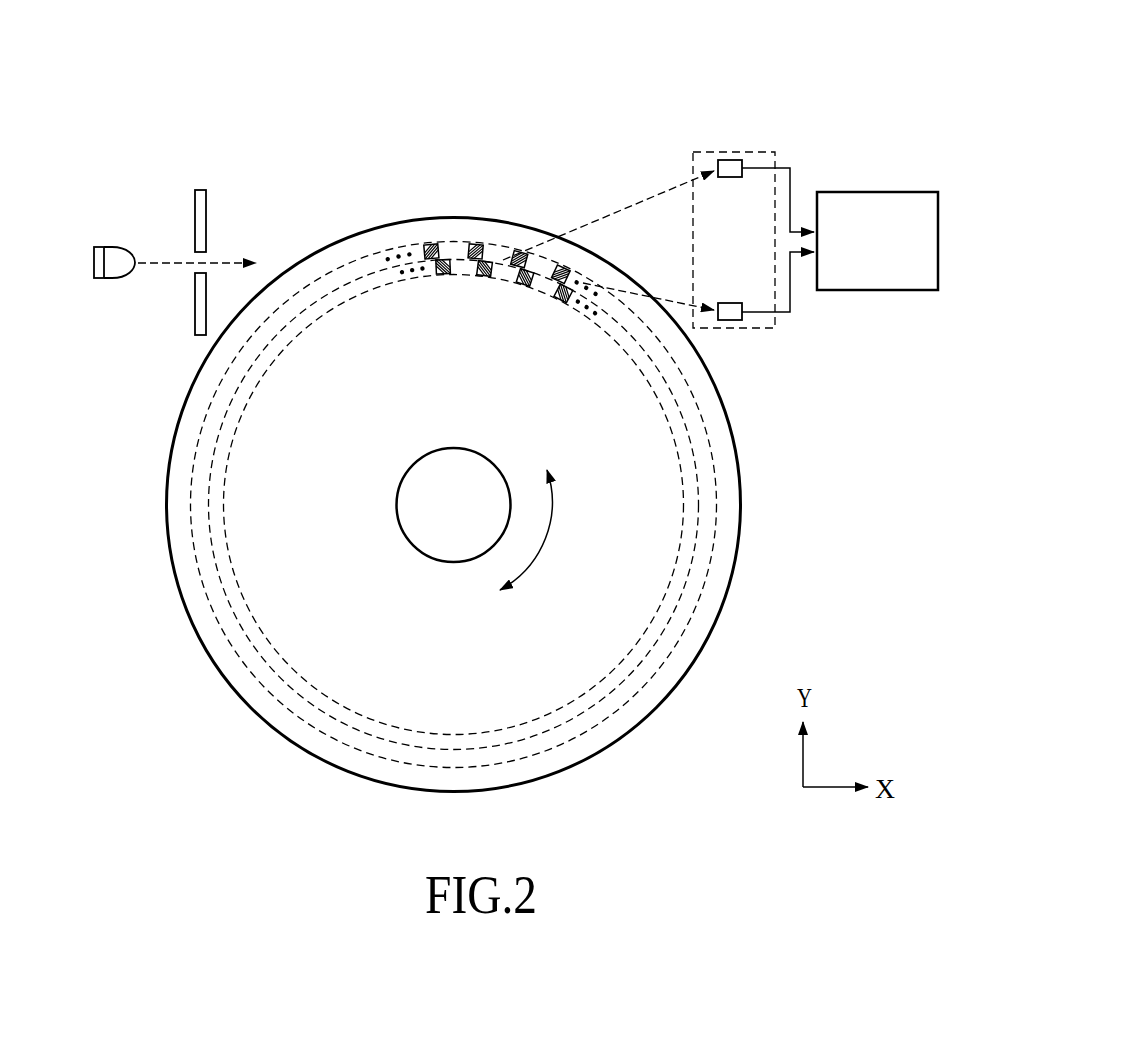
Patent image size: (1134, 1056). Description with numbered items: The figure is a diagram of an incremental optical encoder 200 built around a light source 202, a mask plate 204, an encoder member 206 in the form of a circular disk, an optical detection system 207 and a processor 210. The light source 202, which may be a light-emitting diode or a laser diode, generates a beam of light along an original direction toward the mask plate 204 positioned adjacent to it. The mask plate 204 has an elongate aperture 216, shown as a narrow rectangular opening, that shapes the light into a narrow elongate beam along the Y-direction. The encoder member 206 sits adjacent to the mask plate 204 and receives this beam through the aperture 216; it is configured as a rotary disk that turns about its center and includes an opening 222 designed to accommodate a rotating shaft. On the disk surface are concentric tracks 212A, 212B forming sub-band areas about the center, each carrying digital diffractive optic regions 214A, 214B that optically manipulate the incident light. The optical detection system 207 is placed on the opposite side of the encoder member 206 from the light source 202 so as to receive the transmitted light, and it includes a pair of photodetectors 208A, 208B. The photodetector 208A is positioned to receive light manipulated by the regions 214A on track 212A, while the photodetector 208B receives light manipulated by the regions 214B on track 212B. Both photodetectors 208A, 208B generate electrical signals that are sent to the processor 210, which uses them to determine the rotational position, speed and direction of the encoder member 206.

The optical encoder 200 is at (797, 44).
The light source 202 is at (110, 245).
The mask plate 204 is at (200, 188).
The elongate aperture 216 is at (205, 258).
The encoder member 206 is at (749, 561).
The track 212A is at (700, 450).
The track 212B is at (650, 383).
The digital diffractive optic regions 214A is at (432, 245).
The digital diffractive optic regions 214B is at (443, 274).
The opening 222 is at (418, 457).
The optical detection system 207 is at (700, 151).
The photodetector 208A is at (730, 177).
The photodetector 208B is at (730, 302).
The processor 210 is at (893, 192).